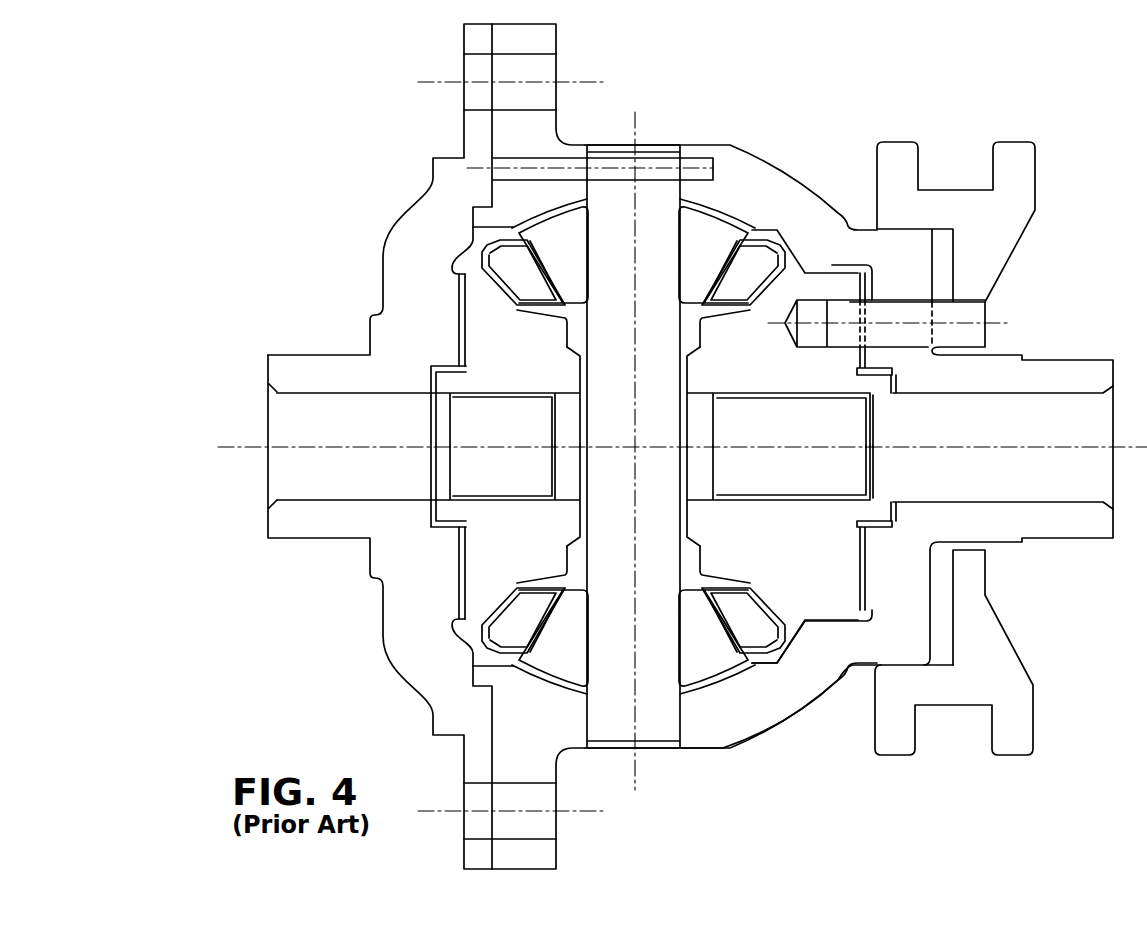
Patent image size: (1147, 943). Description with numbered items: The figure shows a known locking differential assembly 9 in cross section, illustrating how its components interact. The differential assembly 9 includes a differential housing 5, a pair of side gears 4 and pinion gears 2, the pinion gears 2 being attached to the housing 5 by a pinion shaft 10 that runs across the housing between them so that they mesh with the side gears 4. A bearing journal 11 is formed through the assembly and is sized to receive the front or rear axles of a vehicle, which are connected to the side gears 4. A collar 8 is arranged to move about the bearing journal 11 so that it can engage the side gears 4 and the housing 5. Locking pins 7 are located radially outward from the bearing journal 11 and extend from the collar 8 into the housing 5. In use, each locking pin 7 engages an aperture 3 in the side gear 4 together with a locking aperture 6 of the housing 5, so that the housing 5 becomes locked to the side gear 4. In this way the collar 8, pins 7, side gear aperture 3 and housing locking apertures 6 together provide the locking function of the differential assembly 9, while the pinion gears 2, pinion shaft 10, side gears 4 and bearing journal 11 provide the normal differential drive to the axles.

The pinion gears 2 is at (723, 235).
The aperture 3 is at (836, 312).
The side gears 4 is at (498, 542).
The differential housing 5 is at (730, 180).
The locking apertures 6 is at (865, 323).
The locking pins 7 is at (913, 318).
The collar 8 is at (1012, 186).
The differential assembly 9 is at (318, 180).
The pinion shaft 10 is at (660, 723).
The bearing journal 11 is at (1012, 343).